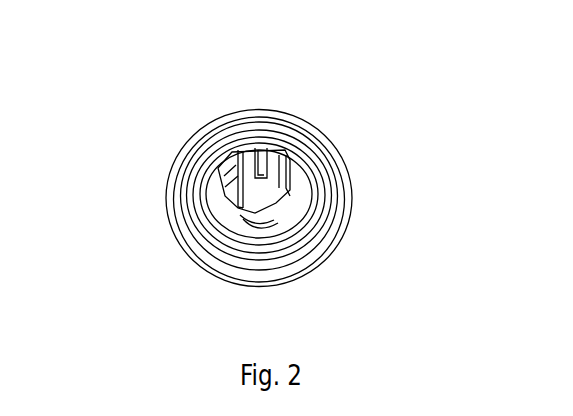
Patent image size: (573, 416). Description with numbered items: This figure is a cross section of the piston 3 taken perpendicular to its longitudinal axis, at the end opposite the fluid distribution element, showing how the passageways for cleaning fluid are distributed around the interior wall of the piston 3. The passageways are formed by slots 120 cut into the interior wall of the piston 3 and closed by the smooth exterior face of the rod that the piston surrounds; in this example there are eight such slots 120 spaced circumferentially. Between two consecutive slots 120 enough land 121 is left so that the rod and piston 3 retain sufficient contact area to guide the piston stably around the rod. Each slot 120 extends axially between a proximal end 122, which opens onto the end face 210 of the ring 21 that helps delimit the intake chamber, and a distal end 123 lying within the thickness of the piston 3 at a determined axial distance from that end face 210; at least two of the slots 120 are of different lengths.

The piston 3 is at (192, 105).
The ring 21 is at (352, 200).
The end face 210 is at (275, 110).
The slots 120 is at (222, 188).
The land 121 is at (248, 148).
The proximal end 122 is at (228, 152).
The distal end 123 is at (245, 225).